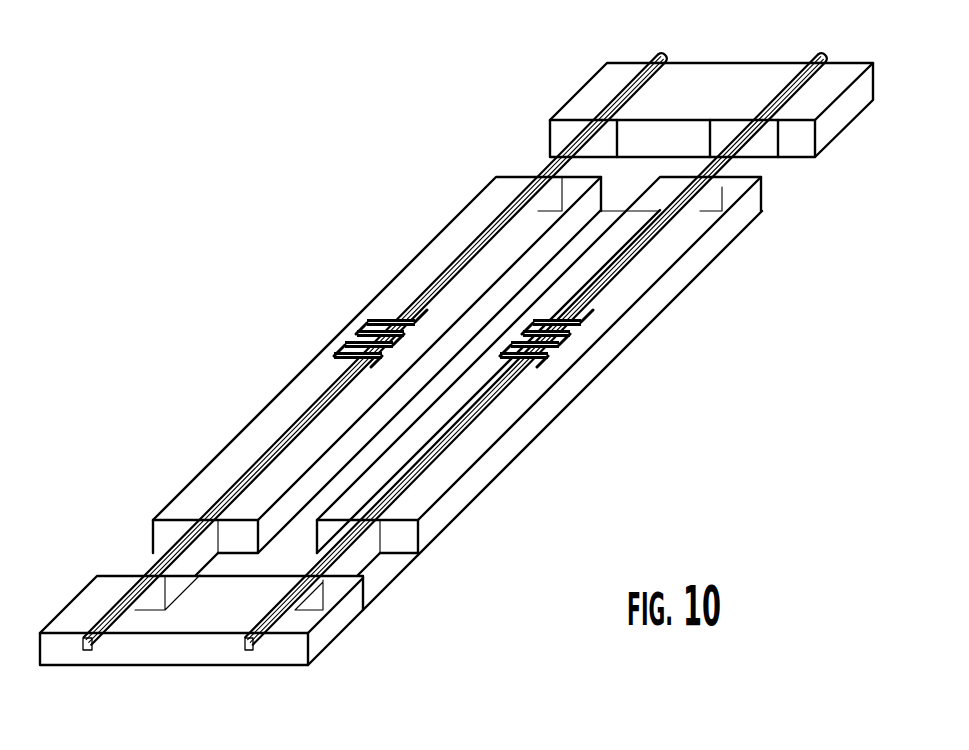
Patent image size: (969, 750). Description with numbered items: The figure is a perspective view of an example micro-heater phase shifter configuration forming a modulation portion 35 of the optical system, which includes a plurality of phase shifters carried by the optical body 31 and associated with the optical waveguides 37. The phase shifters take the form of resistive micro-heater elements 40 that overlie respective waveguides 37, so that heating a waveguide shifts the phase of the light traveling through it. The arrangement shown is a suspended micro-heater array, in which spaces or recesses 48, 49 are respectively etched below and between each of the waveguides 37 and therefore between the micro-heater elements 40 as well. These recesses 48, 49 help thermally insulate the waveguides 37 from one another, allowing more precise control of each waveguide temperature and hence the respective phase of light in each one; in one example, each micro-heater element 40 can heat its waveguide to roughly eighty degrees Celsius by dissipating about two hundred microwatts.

The substrate 31 is at (483, 196).
The modulation portion 35 is at (442, 590).
The waveguides 37 is at (249, 651).
The micro-heater elements 40 is at (344, 348).
The recess 48 is at (527, 139).
The recess 49 is at (627, 175).